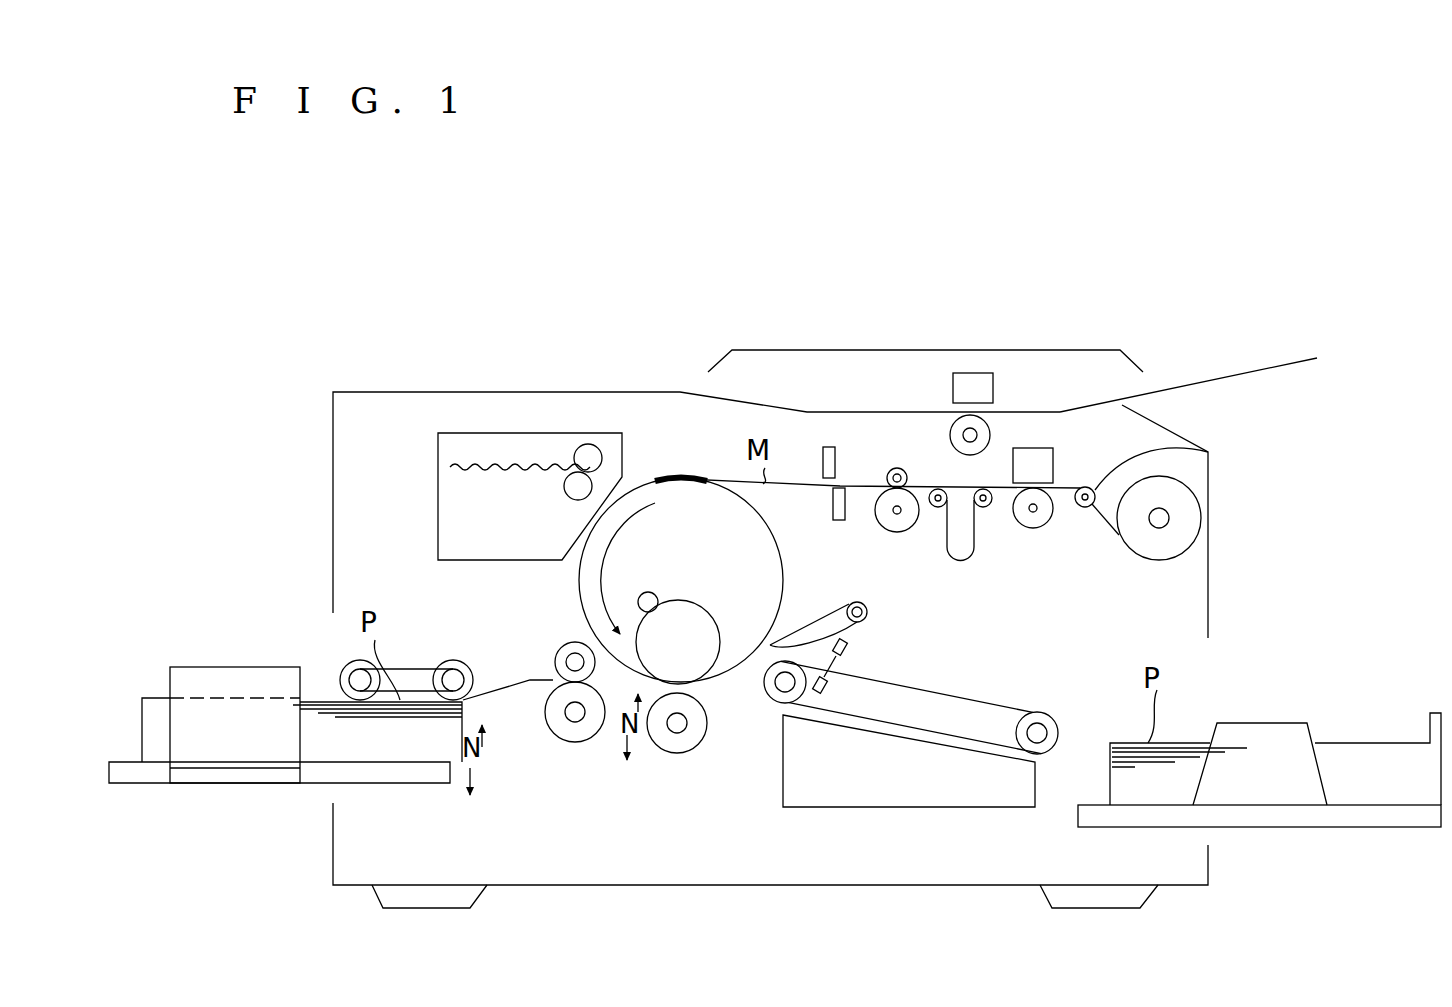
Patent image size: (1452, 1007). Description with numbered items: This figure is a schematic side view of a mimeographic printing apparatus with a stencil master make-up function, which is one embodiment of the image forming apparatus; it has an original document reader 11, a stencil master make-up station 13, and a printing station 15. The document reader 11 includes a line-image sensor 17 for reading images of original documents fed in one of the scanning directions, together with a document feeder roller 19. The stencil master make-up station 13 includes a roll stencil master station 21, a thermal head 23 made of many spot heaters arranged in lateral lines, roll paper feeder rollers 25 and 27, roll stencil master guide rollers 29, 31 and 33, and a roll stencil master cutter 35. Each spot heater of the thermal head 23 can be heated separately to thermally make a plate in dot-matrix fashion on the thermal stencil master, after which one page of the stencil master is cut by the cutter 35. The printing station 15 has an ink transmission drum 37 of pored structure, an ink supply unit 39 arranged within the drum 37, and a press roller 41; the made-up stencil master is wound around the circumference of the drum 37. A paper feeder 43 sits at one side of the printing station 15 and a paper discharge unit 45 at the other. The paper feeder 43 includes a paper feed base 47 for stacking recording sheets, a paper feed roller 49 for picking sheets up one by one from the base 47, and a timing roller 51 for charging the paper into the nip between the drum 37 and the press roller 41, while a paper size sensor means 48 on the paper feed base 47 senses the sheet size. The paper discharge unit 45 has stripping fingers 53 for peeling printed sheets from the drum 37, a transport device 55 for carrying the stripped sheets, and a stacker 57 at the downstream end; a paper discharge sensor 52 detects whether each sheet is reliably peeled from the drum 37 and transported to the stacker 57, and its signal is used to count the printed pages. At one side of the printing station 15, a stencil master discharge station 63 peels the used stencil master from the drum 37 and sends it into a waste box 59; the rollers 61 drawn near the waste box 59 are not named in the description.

The original document reader 11 is at (1005, 396).
The stencil master make-up station 13 is at (1078, 455).
The printing station 15 is at (722, 683).
The line-image sensor 17 is at (972, 373).
The document feeder roller 19 is at (955, 418).
The roll stencil master station 21 is at (1195, 525).
The thermal head 23 is at (1038, 462).
The roll paper feeder roller 25 is at (1037, 522).
The roll paper feeder roller 27 is at (882, 497).
The roll stencil master guide roller 29 is at (1095, 488).
The roll stencil master guide roller 31 is at (985, 510).
The roll stencil master guide roller 33 is at (933, 512).
The roll stencil master cutter 35 is at (835, 503).
The ink transmission drum 37 is at (783, 572).
The ink supply unit 39 is at (700, 594).
The press roller 41 is at (678, 752).
The paper feeder 43 is at (410, 660).
The paper discharge unit 45 is at (1279, 714).
The paper feed base 47 is at (410, 775).
The paper size sensor means 48 is at (232, 790).
The paper feed roller 49 is at (225, 683).
The timing roller 51 is at (553, 698).
The paper discharge sensor 52 is at (814, 698).
The stripping fingers 53 is at (845, 623).
The transport device 55 is at (966, 692).
The stacker 57 is at (1293, 827).
The waste box 59 is at (540, 433).
The application rollers 61 is at (584, 490).
The stencil master discharge station 63 is at (588, 427).